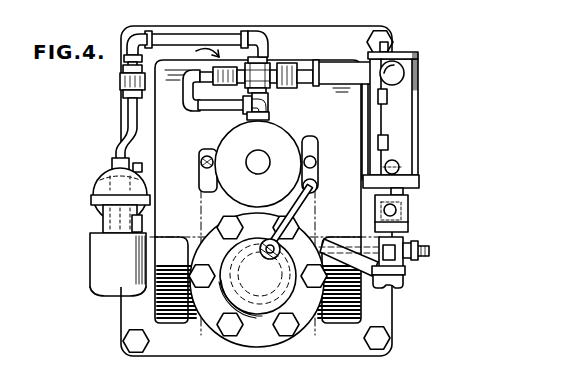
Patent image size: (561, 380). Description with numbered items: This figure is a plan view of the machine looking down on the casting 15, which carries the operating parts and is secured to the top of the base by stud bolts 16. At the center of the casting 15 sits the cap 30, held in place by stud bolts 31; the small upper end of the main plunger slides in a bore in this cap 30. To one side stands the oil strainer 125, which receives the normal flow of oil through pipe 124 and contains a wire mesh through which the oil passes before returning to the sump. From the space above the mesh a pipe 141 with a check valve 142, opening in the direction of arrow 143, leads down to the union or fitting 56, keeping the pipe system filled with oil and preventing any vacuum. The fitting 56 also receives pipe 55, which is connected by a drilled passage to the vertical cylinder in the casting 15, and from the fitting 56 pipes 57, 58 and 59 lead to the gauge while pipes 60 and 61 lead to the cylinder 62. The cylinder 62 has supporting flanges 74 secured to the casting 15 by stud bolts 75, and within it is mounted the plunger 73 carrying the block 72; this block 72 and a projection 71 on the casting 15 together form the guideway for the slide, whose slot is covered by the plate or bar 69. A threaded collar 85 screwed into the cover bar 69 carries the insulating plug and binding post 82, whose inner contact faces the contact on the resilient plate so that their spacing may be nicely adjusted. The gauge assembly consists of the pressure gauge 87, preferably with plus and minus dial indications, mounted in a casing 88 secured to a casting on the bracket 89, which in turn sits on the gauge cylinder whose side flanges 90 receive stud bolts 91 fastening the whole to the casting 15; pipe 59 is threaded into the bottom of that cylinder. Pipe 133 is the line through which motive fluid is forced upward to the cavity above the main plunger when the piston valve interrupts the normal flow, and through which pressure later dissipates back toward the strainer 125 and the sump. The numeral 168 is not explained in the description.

The casting 15 is at (352, 302).
The stud bolts 16 is at (123, 345).
The cap 30 is at (285, 298).
The stud bolts 31 is at (285, 336).
The pipe 55 is at (266, 98).
The fitting 56 is at (262, 72).
The pipe 57 is at (268, 36).
The pipe 58 is at (187, 34).
The pipe 59 is at (130, 120).
The pipe 60 is at (343, 78).
The pipe 61 is at (419, 72).
The cylinder 62 is at (419, 126).
The plate or bar 69 is at (404, 277).
The projection 71 is at (406, 268).
The block 72 is at (409, 226).
The plunger 73 is at (403, 191).
The supporting flanges 74 is at (366, 136).
The stud bolts 75 is at (392, 96).
The binding post 82 is at (429, 250).
The threaded collar 85 is at (418, 247).
The pressure gauge 87 is at (113, 288).
The casing 88 is at (118, 260).
The bracket 89 is at (98, 194).
The side flanges 90 is at (143, 167).
The stud bolts 91 is at (121, 163).
The pipe 124 is at (201, 162).
The oil strainer 125 is at (266, 164).
The pipe 133 is at (302, 204).
The pipe 141 is at (223, 108).
The check valve 142 is at (218, 83).
The arrow 143 is at (193, 53).
The arm 168 is at (349, 257).